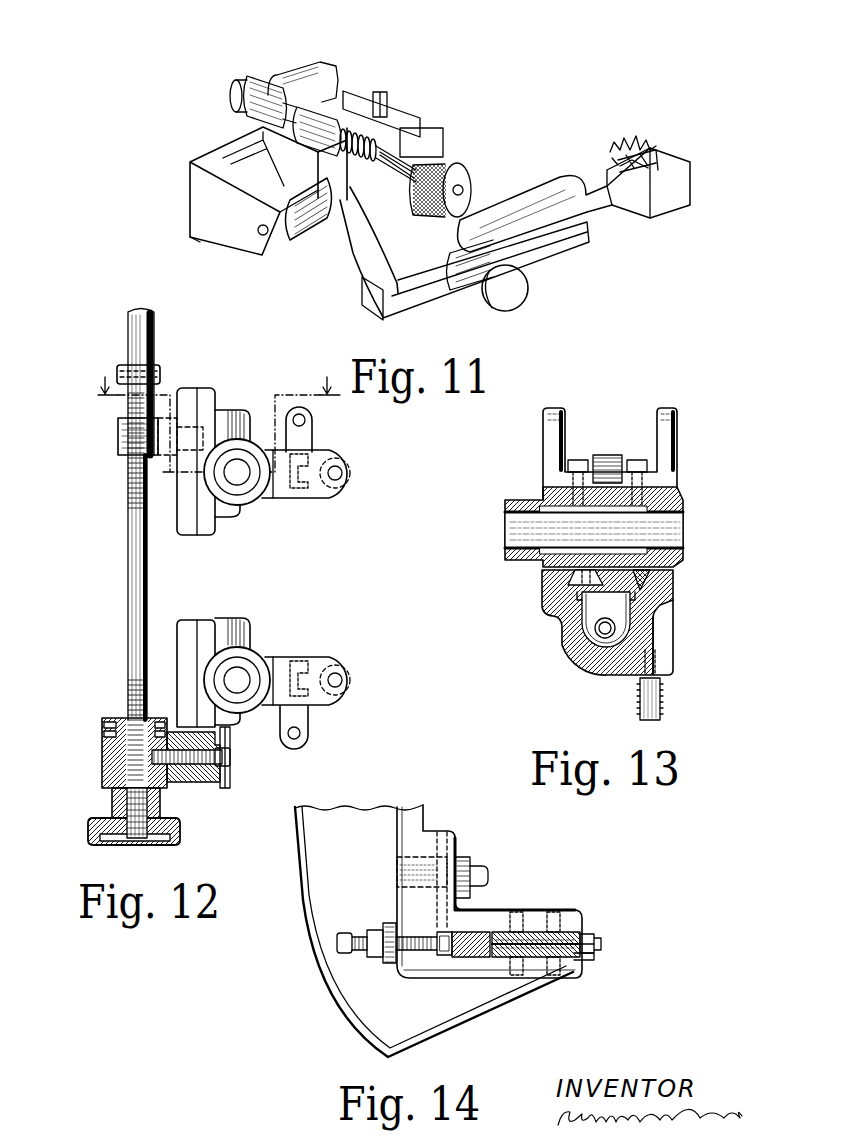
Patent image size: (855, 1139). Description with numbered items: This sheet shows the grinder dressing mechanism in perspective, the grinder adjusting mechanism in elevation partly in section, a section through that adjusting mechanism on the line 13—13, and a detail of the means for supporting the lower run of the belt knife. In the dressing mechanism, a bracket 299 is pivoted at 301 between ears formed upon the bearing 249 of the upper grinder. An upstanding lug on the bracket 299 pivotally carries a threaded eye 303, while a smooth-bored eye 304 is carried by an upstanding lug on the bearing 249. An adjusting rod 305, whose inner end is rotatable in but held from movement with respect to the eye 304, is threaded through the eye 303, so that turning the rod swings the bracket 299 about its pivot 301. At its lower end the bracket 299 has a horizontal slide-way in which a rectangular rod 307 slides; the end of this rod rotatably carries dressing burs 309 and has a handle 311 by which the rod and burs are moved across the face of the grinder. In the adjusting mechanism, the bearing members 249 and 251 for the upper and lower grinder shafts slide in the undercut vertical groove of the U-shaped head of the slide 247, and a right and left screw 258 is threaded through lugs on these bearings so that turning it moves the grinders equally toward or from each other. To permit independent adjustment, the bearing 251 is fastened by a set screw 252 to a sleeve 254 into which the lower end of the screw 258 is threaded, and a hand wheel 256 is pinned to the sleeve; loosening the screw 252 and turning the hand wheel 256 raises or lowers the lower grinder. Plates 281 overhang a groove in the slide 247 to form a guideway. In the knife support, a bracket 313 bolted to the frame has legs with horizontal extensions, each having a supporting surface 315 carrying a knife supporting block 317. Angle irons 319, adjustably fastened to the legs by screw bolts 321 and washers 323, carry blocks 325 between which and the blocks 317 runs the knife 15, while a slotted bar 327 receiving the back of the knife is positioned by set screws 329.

In FIG. 11, the bearing member 249 is at (305, 88).
In FIG. 12, the bearing member 249 is at (216, 520).
In FIG. 13, the bearing member 249 is at (668, 450).
In FIG. 11, the smooth-bored eye 304 is at (262, 100).
In FIG. 11, the threaded eye 303 is at (343, 97).
In FIG. 11, the adjusting rod 305 is at (412, 165).
In FIG. 11, the bracket 299 is at (378, 235).
In FIG. 11, the pivot 301 is at (260, 233).
In FIG. 11, the rectangular rod 307 is at (628, 200).
In FIG. 11, the dressing burs 309 is at (636, 144).
In FIG. 11, the handle 311 is at (515, 290).
In FIG. 12, the section line 13 is at (218, 424).
In FIG. 12, the right and left screw 258 is at (140, 573).
In FIG. 13, the right and left screw 258 is at (605, 631).
In FIG. 12, the bearing member 251 is at (200, 630).
In FIG. 12, the sleeve 254 is at (120, 718).
In FIG. 12, the set screw 252 is at (233, 760).
In FIG. 12, the hand wheel 256 is at (182, 834).
In FIG. 13, the slide 247 is at (660, 618).
In FIG. 13, the plates 281 is at (662, 692).
In FIG. 14, the bracket 313 is at (362, 827).
In FIG. 14, the angle irons 319 is at (497, 922).
In FIG. 14, the washers 323 is at (468, 862).
In FIG. 14, the screw bolts 321 is at (490, 877).
In FIG. 14, the set screws 329 is at (343, 949).
In FIG. 14, the bar 327 is at (470, 958).
In FIG. 14, the supporting surface 315 is at (505, 958).
In FIG. 14, the blocks 325 is at (590, 936).
In FIG. 14, the knife 15 is at (600, 943).
In FIG. 14, the knife supporting block 317 is at (592, 960).